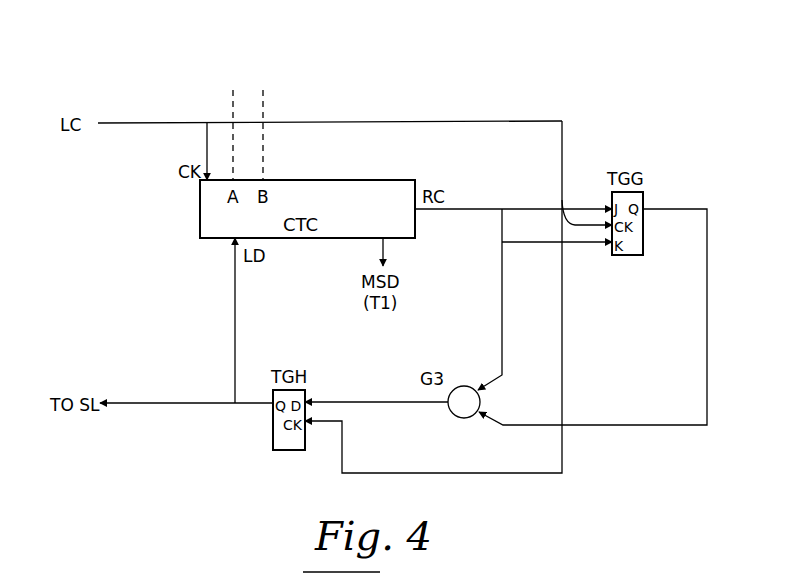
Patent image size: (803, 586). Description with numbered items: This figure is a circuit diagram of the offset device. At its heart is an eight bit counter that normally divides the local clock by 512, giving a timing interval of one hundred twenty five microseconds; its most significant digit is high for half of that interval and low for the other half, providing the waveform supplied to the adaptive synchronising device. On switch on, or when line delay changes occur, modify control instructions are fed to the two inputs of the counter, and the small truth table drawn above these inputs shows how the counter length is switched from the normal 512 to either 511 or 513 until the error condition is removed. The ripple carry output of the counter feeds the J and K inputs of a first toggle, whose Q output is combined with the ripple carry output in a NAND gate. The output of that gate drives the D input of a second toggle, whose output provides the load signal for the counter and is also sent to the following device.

The counter division ratio 512 is at (286, 33).
The counter division ratio 511 is at (286, 55).
The counter division ratio 513 is at (286, 77).